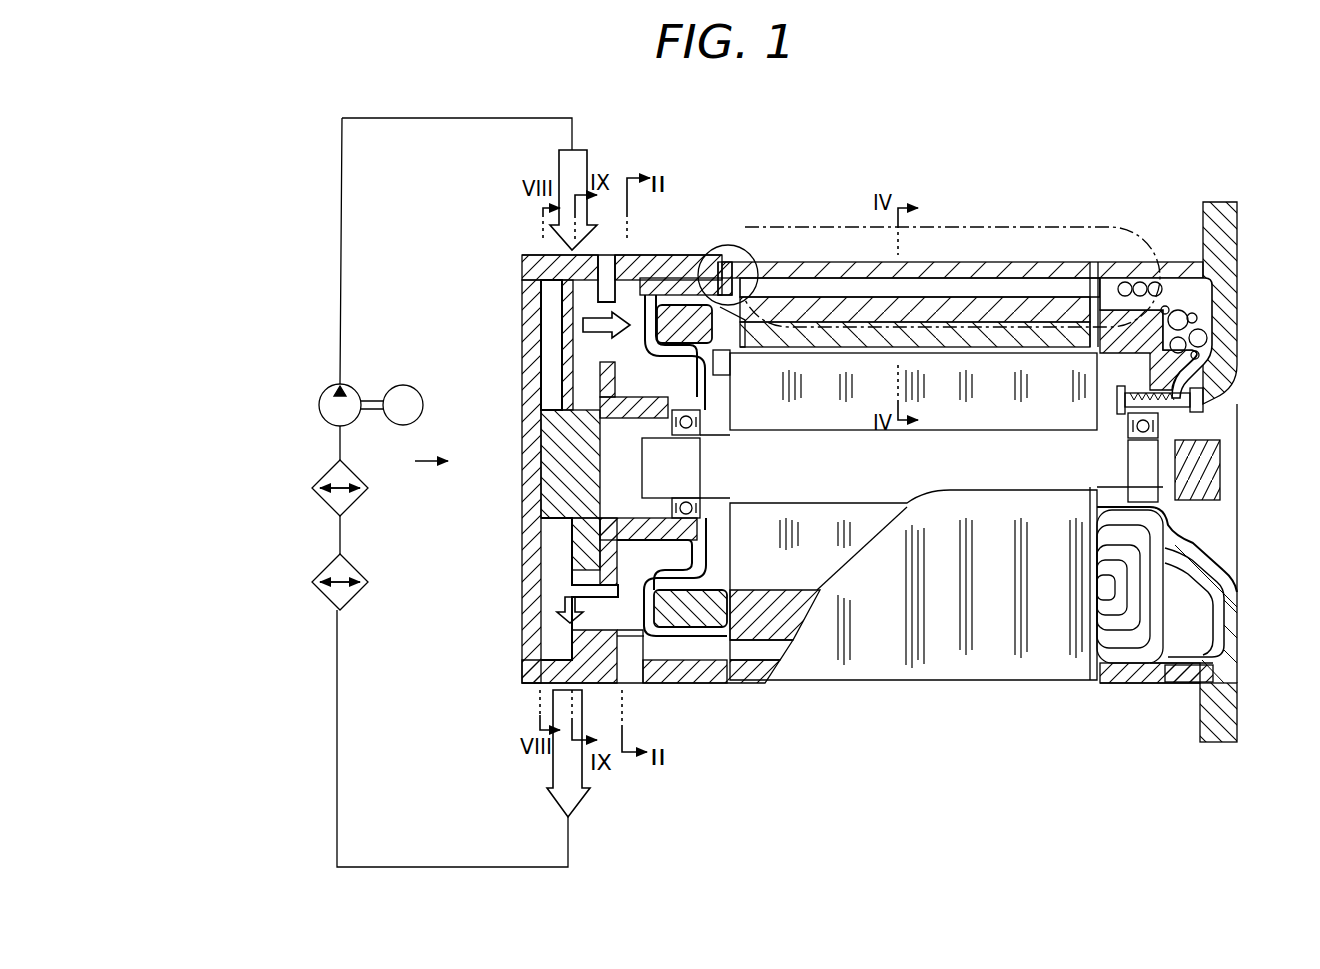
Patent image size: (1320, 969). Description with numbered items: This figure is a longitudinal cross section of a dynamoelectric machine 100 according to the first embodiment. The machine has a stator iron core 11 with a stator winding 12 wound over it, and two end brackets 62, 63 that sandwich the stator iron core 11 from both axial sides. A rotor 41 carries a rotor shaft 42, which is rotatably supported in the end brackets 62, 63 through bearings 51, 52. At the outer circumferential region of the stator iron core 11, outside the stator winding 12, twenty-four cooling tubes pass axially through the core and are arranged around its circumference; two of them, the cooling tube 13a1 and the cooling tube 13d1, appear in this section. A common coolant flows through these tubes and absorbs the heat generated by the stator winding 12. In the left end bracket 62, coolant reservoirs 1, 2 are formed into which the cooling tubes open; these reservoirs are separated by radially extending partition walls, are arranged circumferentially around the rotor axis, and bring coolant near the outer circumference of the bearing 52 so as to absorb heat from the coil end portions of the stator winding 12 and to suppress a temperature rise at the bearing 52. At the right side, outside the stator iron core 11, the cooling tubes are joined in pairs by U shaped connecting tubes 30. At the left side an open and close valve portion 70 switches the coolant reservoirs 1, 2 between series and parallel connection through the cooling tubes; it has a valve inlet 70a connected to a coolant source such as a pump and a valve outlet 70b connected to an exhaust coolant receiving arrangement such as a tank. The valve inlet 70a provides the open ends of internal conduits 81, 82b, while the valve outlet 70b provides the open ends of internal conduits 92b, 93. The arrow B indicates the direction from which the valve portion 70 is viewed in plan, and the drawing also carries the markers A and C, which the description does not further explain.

The coolant reservoir 1 is at (625, 298).
The coolant reservoir 2 is at (628, 650).
The stator iron core 11 is at (980, 288).
The stator winding 12 is at (800, 323).
The cooling tube 13a1 is at (993, 270).
The cooling tube 13d1 is at (758, 657).
The U shaped connecting tube 30 is at (1128, 643).
The rotor 41 is at (815, 555).
The rotor shaft 42 is at (765, 492).
The bearing 51 is at (1147, 428).
The bearing 52 is at (700, 425).
The end bracket 62 is at (660, 262).
The end bracket 63 is at (1210, 222).
The open and close valve portion 70 is at (524, 252).
The valve inlet 70a is at (586, 172).
The valve outlet 70b is at (608, 738).
The internal conduit 81 is at (582, 295).
The internal conduit 82b is at (583, 622).
The internal conduit 92b is at (567, 637).
The internal conduit 93 is at (552, 338).
The dynamoelectric machine 100 is at (1222, 188).
The detail region A is at (745, 243).
The arrow B direction B is at (420, 462).
The coolant flow path C is at (1079, 226).